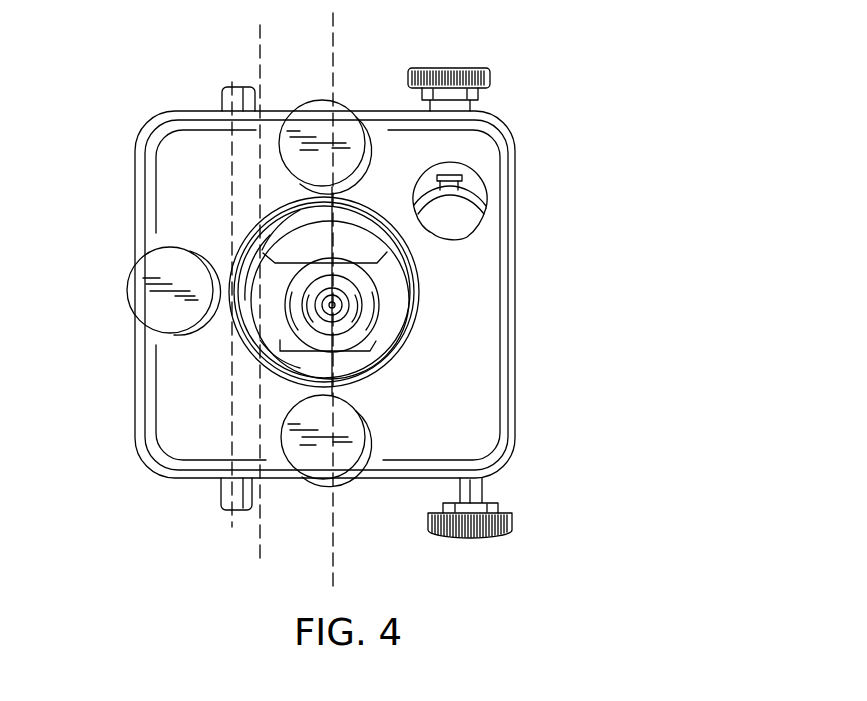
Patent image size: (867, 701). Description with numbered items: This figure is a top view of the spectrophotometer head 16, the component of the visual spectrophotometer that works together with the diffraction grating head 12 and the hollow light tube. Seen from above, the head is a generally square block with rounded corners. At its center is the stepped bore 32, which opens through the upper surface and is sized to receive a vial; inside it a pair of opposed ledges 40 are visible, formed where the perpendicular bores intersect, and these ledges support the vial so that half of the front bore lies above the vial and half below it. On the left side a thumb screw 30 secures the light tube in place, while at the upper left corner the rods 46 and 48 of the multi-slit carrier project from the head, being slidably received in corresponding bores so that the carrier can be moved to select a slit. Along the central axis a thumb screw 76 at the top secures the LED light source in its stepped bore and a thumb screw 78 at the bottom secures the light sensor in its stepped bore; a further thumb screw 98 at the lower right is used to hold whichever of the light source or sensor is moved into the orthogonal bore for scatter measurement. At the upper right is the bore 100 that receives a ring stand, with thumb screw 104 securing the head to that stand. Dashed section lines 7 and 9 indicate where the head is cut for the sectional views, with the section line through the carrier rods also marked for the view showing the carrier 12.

The section line 7- 7 is at (333, 13).
The section line 9- 9 is at (260, 25).
The diffraction grating head 12 is at (232, 82).
The spectrophotometer head 16 is at (106, 353).
The thumb screw 30 is at (132, 292).
The stepped bore 32 is at (390, 286).
The opposed ledges 40 is at (345, 257).
The rod 46 is at (247, 88).
The rod 48 is at (220, 495).
The thumb screw 76 is at (338, 117).
The thumb screw 78 is at (345, 458).
The thumb screw 98 is at (467, 538).
The bore 100 is at (486, 190).
The thumb screw 104 is at (455, 69).